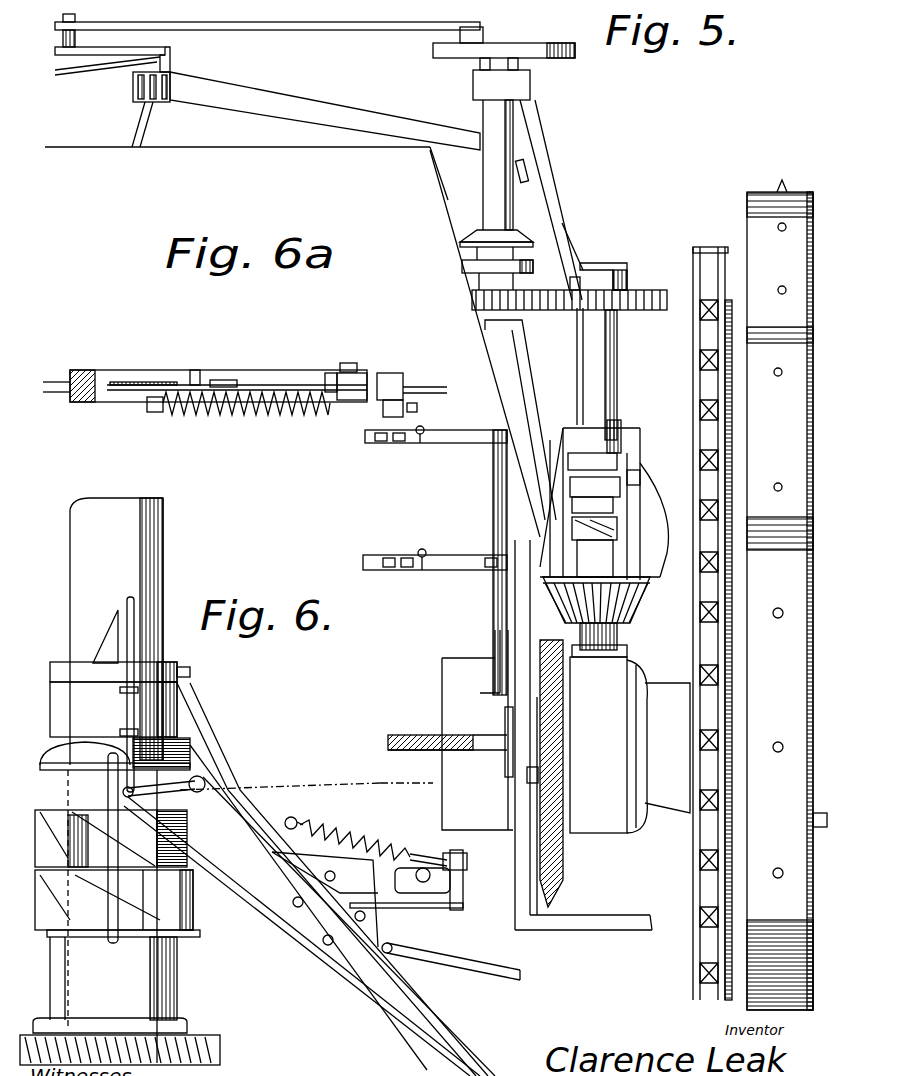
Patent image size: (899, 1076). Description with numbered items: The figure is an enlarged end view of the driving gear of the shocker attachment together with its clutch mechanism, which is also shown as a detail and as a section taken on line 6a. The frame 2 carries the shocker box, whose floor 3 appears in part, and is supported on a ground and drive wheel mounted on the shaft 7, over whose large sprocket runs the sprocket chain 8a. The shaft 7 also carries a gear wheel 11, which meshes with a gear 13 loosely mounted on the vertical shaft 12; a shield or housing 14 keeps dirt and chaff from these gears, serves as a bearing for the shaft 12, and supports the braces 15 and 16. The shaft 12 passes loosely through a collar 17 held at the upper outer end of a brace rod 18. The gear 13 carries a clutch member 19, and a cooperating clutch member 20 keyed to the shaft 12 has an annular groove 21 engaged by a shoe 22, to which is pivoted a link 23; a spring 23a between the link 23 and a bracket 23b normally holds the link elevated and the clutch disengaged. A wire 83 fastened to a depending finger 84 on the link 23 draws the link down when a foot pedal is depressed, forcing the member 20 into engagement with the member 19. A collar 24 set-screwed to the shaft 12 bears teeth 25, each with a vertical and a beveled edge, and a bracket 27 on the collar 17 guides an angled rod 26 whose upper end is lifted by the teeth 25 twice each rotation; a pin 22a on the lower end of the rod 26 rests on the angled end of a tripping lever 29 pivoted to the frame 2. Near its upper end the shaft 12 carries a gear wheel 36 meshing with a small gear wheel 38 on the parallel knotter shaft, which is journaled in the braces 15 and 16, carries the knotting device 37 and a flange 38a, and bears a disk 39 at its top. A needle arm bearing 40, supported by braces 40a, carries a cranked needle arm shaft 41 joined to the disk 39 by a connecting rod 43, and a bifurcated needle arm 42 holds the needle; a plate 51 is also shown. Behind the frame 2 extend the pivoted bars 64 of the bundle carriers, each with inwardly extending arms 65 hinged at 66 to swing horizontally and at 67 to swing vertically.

In FIG. 5, the frame 2 is at (630, 745).
In FIG. 5, the floor 3 is at (453, 740).
In FIG. 5, the section line 6a is at (407, 786).
In FIG. 6, the section line 6a is at (280, 779).
In FIG. 5, the shaft 7 is at (506, 765).
In FIG. 5, the sprocket chain 8a is at (700, 380).
In FIG. 5, the gear wheel 11 is at (557, 870).
In FIG. 5, the vertical shaft 12 is at (600, 357).
In FIG. 6, the vertical shaft 12 is at (150, 552).
In FIG. 5, the gear 13 is at (645, 600).
In FIG. 6, the gear 13 is at (200, 1033).
In FIG. 5, the shield or housing 14 is at (515, 605).
In FIG. 5, the brace 15 is at (517, 345).
In FIG. 5, the brace 16 is at (553, 193).
In FIG. 5, the collar 17 is at (600, 504).
In FIG. 6, the collar 17 is at (113, 709).
In FIG. 6A, the brace rod 18 is at (150, 338).
In FIG. 6, the brace rod 18 is at (243, 767).
In FIG. 5, the clutch member 19 is at (580, 552).
In FIG. 6, the clutch member 19 is at (114, 900).
In FIG. 5, the slidable clutch member 20 is at (575, 525).
In FIG. 6, the slidable clutch member 20 is at (96, 838).
In FIG. 6, the annular groove 21 is at (139, 785).
In FIG. 6, the shoe 22 is at (188, 752).
In FIG. 5, the pin 22a is at (648, 505).
In FIG. 6, the pin 22a is at (185, 815).
In FIG. 6A, the link 23 is at (243, 385).
In FIG. 6, the link 23 is at (286, 820).
In FIG. 6A, the spring 23a is at (253, 413).
In FIG. 6, the spring 23a is at (368, 843).
In FIG. 6A, the bracket 23b is at (395, 373).
In FIG. 6, the bracket 23b is at (455, 888).
In FIG. 6, the collar 24 is at (243, 671).
In FIG. 5, the teeth 25 is at (573, 470).
In FIG. 6, the teeth 25 is at (110, 622).
In FIG. 5, the angled rod 26 is at (625, 452).
In FIG. 6, the angled rod 26 is at (135, 645).
In FIG. 5, the bracket 27 is at (640, 478).
In FIG. 6, the bracket 27 is at (138, 729).
In FIG. 5, the tripping lever 29 is at (628, 653).
In FIG. 5, the gear wheel 36 is at (650, 292).
In FIG. 5, the knotting device 37 is at (478, 243).
In FIG. 5, the small gear wheel 38 is at (478, 303).
In FIG. 5, the flange 38a is at (483, 183).
In FIG. 5, the disk 39 is at (555, 58).
In FIG. 6A, the needle arm bearing 40 is at (135, 90).
In FIG. 6A, the braces 40a is at (245, 106).
In FIG. 6A, the cranked needle arm shaft 41 is at (170, 50).
In FIG. 6A, the bifurcated needle arm 42 is at (77, 73).
In FIG. 6A, the connecting rod 43 is at (290, 16).
In FIG. 6A, the plate 51 is at (300, 160).
In FIG. 5, the pivoted bars 64 is at (493, 505).
In FIG. 5, the arms 65 is at (452, 443).
In FIG. 5, the hinges 66 is at (425, 428).
In FIG. 5, the hinges 67 is at (380, 443).
In FIG. 6, the wire 83 is at (475, 965).
In FIG. 6, the depending finger 84 is at (388, 930).